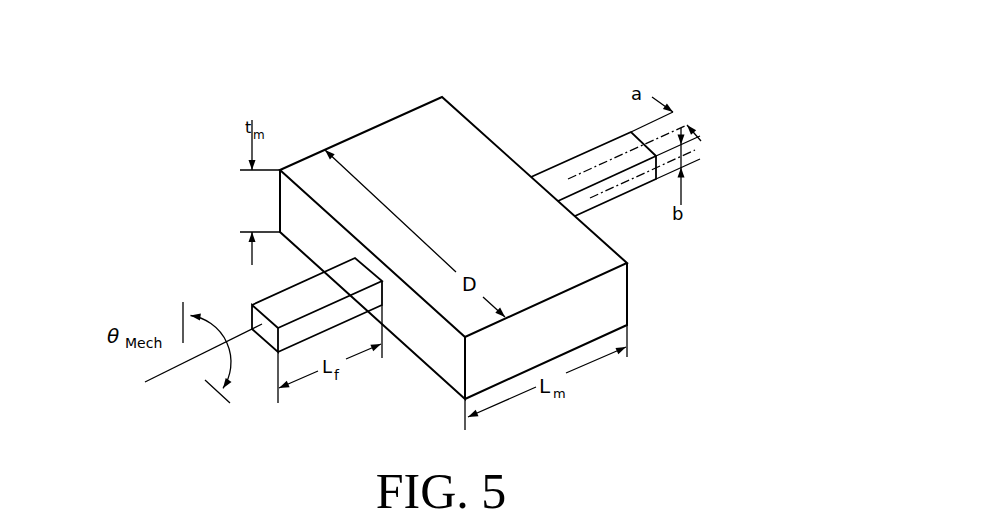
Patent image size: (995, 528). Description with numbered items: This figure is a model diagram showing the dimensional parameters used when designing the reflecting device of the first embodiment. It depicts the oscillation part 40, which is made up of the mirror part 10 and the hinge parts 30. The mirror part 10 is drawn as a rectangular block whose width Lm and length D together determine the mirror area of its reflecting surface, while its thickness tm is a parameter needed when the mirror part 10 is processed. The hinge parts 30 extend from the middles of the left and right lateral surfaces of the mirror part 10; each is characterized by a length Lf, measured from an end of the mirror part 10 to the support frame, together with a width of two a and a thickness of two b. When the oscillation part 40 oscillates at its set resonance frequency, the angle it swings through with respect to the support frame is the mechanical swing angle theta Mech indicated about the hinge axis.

The mirror part 10 is at (460, 160).
The hinge parts 30 is at (577, 167).
The oscillation part 40 is at (653, 53).